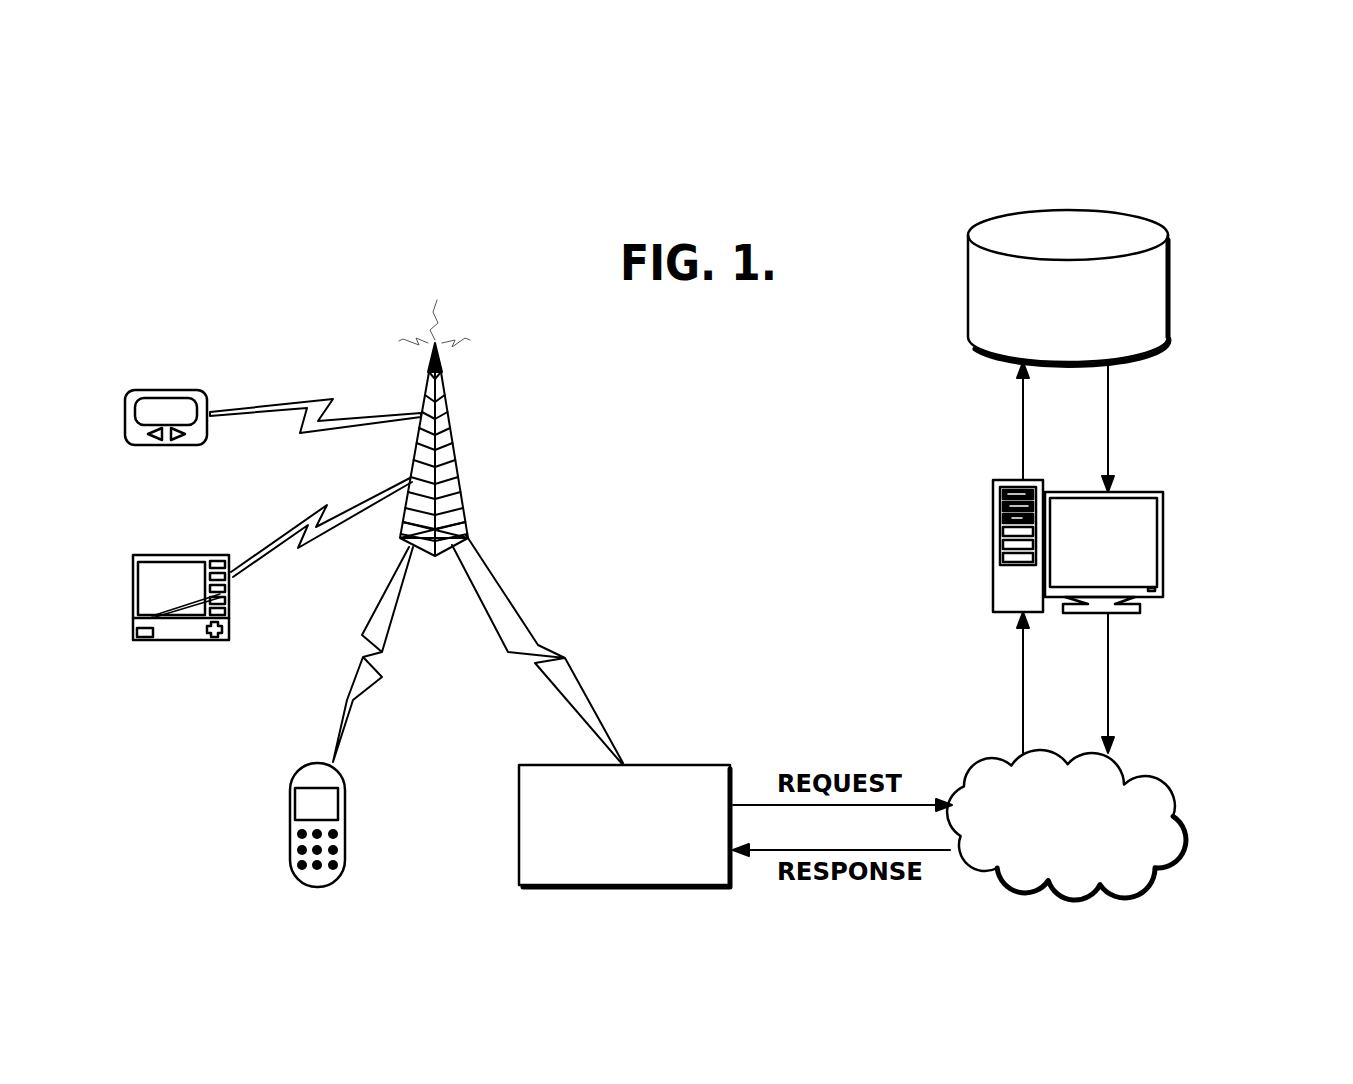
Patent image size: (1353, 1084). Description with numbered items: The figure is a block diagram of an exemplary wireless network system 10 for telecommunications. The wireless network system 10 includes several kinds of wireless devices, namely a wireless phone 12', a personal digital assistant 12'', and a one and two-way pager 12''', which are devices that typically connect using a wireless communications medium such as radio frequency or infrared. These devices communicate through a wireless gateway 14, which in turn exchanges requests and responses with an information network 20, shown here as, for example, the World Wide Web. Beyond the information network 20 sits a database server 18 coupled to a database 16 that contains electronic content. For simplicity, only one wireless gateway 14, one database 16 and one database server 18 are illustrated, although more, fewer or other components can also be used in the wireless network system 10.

The wireless network system 10 is at (1272, 157).
The wireless phone 12' is at (297, 825).
The personal digital assistant 12'' is at (159, 597).
The one and two-way pager 12''' is at (143, 433).
The wireless gateway 14 is at (519, 827).
The database 16 is at (1168, 282).
The database server 18 is at (993, 537).
The information network 20 is at (1185, 833).